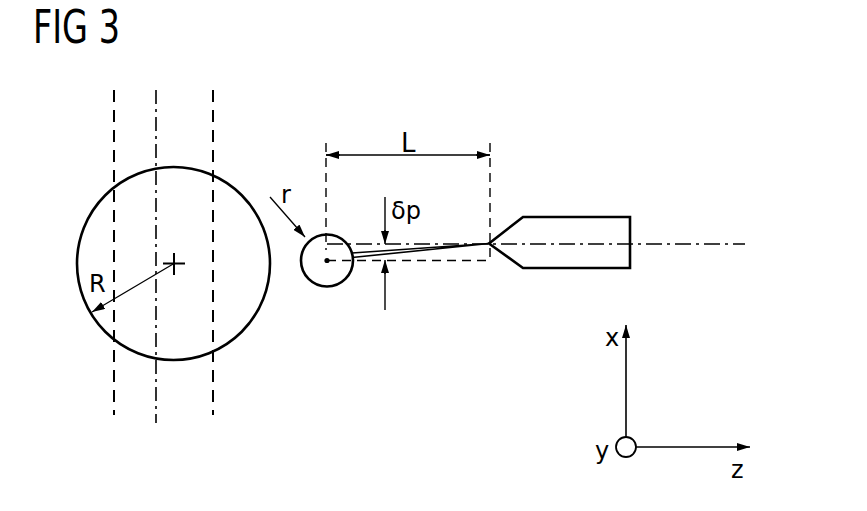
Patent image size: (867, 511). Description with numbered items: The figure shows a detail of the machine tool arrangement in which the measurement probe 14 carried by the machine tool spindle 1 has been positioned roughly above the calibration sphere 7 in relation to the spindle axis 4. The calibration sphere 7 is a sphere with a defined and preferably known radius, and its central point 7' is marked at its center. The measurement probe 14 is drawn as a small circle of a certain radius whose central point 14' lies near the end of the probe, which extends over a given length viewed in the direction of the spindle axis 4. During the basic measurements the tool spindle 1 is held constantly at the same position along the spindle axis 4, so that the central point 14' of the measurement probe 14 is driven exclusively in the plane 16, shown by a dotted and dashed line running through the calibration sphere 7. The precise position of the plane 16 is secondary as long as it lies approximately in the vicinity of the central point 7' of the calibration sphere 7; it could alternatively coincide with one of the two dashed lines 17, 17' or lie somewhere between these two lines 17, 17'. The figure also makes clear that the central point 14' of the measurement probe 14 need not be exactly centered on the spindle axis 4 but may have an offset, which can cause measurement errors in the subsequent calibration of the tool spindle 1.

The machine tool spindle 1 is at (562, 217).
The spindle axis 4 is at (707, 244).
The calibration sphere 7 is at (149, 263).
The central point of the calibration sphere 7' is at (184, 242).
The measurement probe 14 is at (334, 295).
The central point of the measurement probe 14' is at (306, 296).
The plane 16 is at (158, 405).
The dashed line 17 is at (247, 252).
The dashed line 17' is at (79, 252).